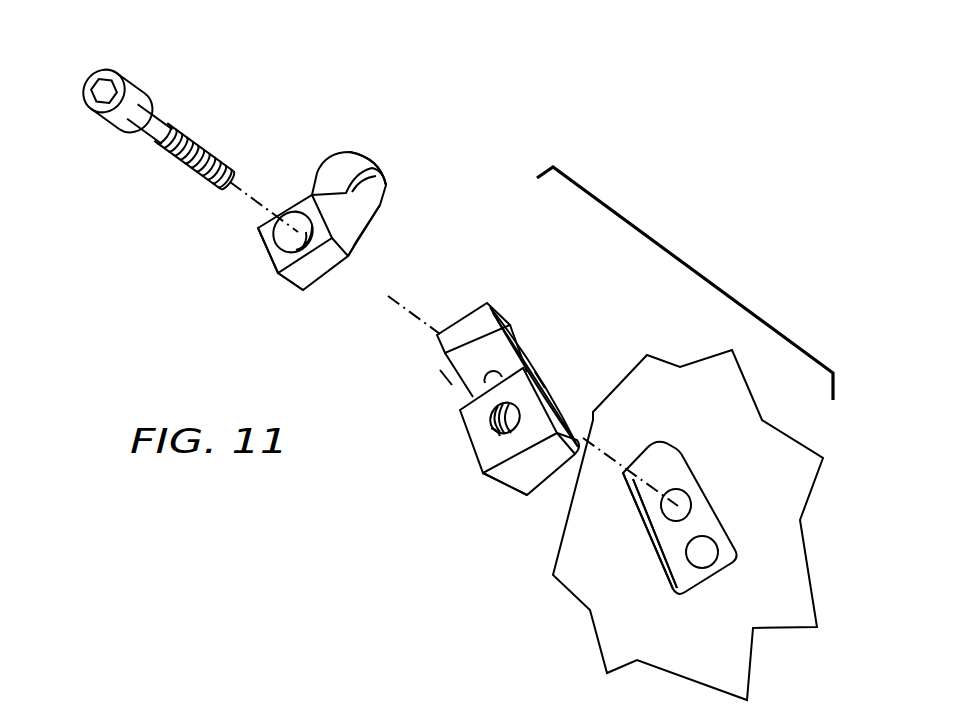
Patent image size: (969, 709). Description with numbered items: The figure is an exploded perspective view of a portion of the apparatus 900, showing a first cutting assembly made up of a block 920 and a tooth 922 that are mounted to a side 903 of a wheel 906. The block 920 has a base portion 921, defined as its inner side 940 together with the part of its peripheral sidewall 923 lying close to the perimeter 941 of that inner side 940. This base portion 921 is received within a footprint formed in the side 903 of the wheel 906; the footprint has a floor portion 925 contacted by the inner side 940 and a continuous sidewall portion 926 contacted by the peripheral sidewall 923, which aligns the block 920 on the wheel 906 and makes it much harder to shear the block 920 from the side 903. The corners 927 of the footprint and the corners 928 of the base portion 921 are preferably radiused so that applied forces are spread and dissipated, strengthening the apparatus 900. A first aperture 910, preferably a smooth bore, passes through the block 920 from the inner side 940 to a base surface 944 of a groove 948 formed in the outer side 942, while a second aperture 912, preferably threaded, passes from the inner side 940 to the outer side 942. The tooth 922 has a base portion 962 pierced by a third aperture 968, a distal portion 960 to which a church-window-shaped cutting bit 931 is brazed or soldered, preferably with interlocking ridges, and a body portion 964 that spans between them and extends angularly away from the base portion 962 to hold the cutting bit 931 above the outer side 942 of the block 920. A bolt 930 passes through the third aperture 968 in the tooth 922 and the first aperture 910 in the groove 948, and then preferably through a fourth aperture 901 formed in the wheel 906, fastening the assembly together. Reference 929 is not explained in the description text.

The apparatus 900 is at (506, 186).
The fourth aperture 901 is at (683, 493).
The side of the wheel 903 is at (740, 418).
The wheel 906 is at (690, 264).
The first aperture 910 is at (480, 378).
The second aperture 912 is at (491, 428).
The block 920 is at (513, 330).
The base portion of the block 921 is at (570, 426).
The tooth 922 is at (283, 278).
The peripheral sidewall of the block 923 is at (556, 368).
The floor portion 925 is at (703, 522).
The continuous sidewall portion 926 is at (641, 529).
The corners of the footprint 927 is at (656, 440).
The corners of the base portion 928 is at (526, 496).
The plate edge 929 is at (653, 568).
The bolt 930 is at (137, 86).
The cutting bit 931 is at (377, 188).
The inner side of the block 940 is at (552, 379).
The perimeter of the inner side 941 is at (537, 367).
The outer side of the block 942 is at (466, 322).
The base surface of the groove 944 is at (478, 380).
The groove 948 is at (433, 375).
The distal portion of the tooth 960 is at (347, 190).
The base portion of the tooth 962 is at (313, 275).
The body portion of the tooth 964 is at (356, 226).
The third aperture 968 is at (280, 235).